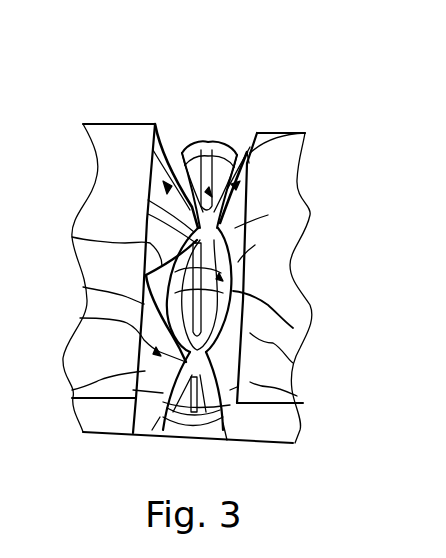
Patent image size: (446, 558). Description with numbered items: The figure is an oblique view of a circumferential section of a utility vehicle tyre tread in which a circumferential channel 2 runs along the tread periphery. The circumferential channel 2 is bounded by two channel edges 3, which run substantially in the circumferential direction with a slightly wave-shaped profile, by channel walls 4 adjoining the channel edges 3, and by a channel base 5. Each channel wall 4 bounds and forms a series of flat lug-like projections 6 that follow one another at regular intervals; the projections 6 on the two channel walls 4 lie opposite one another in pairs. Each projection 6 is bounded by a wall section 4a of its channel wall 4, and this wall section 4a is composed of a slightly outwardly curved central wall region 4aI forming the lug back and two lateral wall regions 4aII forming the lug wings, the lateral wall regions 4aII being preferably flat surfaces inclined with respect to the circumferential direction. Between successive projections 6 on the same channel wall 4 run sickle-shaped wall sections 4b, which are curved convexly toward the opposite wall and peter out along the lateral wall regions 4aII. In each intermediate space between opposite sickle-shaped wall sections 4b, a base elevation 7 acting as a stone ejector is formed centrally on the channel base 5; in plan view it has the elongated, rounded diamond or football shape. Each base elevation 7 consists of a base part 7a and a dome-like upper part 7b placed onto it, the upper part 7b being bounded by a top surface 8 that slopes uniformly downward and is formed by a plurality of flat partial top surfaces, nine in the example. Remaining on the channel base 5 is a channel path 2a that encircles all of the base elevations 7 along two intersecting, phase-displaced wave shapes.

The circumferential channel 2 is at (237, 88).
The channel path 2a is at (247, 152).
The channel edge 3 is at (305, 133).
The channel wall 4 is at (142, 127).
The wall section 4a is at (83, 287).
The central wall region 4aI is at (297, 396).
The lateral wall region 4aII is at (72, 390).
The sickle-shaped wall section 4b is at (72, 237).
The channel base 5 is at (192, 147).
The projection 6 is at (80, 318).
The base elevation 7 is at (255, 245).
The base part 7a is at (293, 363).
The dome-like upper part 7b is at (293, 328).
The top surface 8 is at (268, 215).